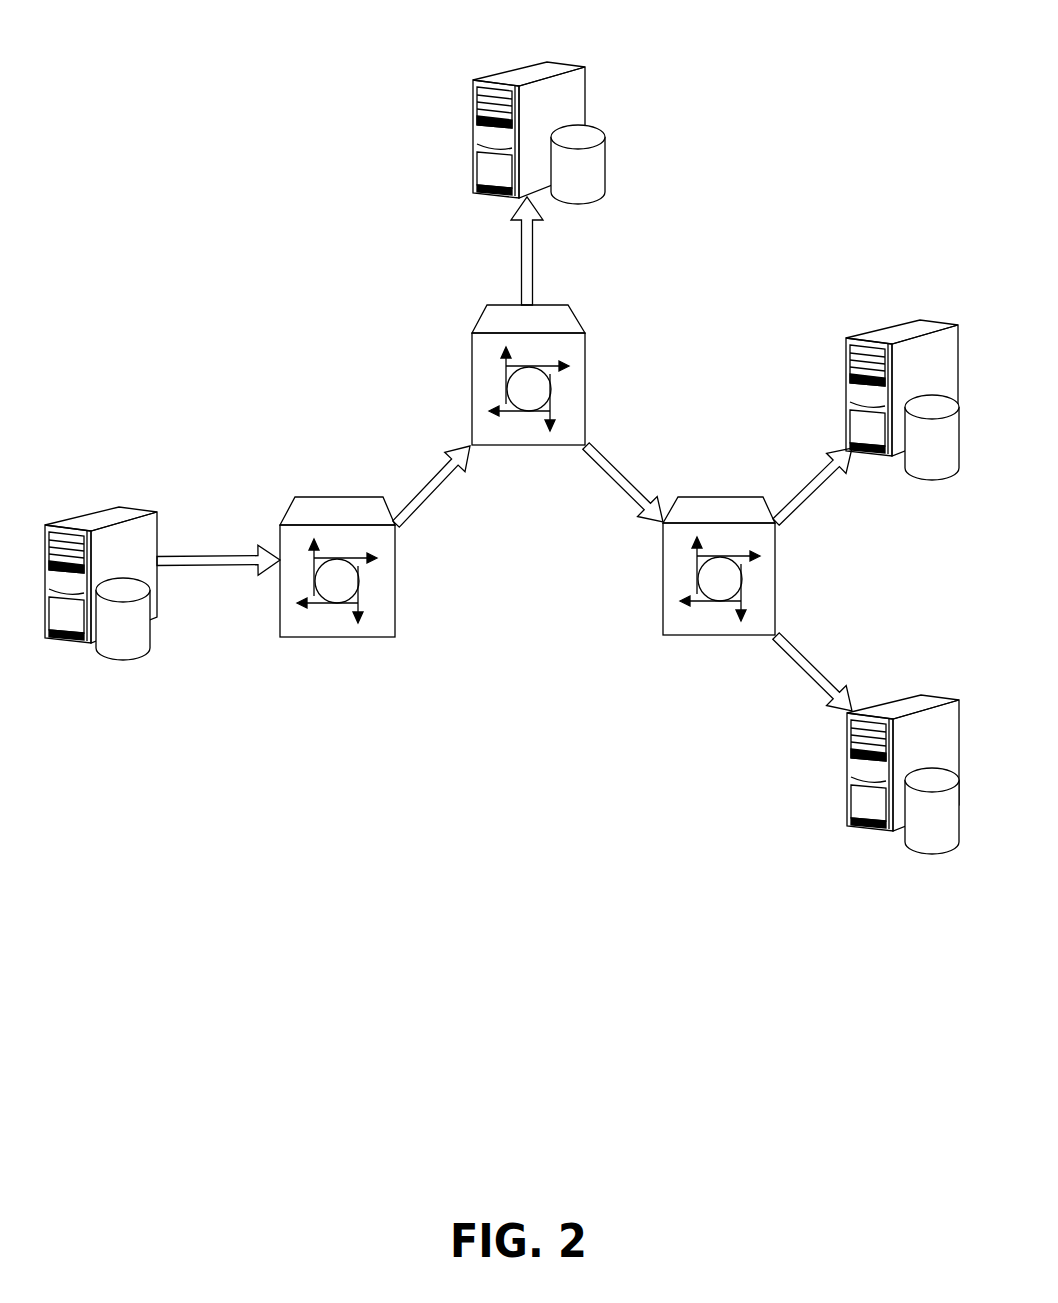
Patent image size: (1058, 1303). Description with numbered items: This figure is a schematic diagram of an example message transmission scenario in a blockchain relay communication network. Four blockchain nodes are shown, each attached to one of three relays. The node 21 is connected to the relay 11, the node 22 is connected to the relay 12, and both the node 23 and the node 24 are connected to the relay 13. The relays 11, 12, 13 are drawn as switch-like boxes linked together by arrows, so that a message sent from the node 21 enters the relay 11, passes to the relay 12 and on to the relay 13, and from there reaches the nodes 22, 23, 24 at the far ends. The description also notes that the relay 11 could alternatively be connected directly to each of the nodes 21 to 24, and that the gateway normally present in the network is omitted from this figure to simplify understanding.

The relay 11 is at (337, 502).
The relay 12 is at (562, 312).
The relay 13 is at (717, 503).
The node 21 is at (130, 510).
The node 22 is at (558, 67).
The node 23 is at (927, 325).
The node 24 is at (925, 698).